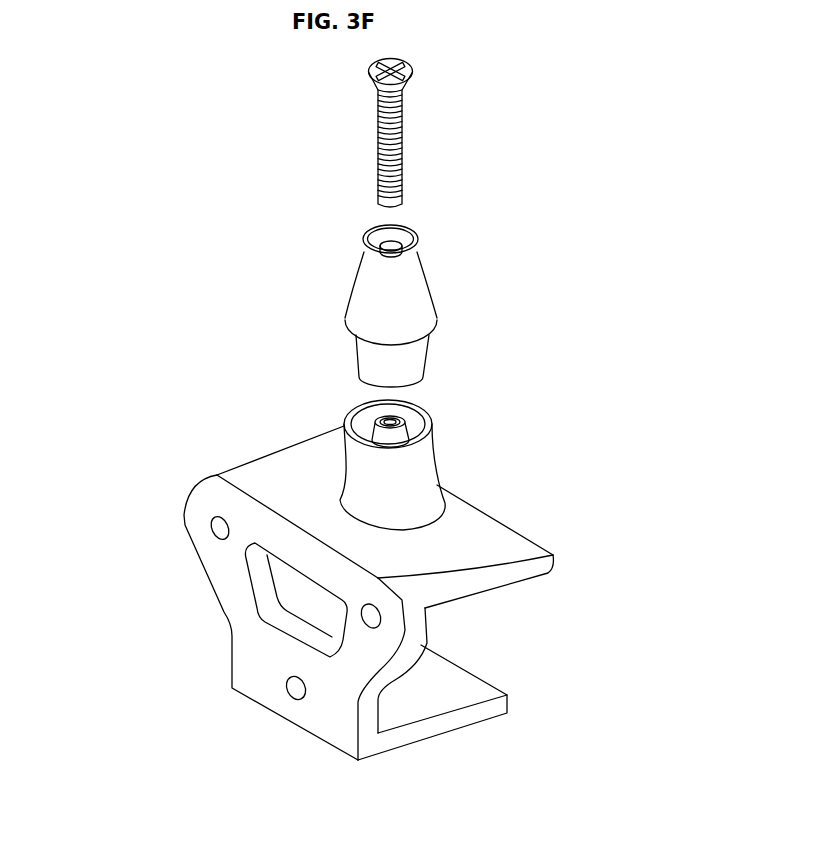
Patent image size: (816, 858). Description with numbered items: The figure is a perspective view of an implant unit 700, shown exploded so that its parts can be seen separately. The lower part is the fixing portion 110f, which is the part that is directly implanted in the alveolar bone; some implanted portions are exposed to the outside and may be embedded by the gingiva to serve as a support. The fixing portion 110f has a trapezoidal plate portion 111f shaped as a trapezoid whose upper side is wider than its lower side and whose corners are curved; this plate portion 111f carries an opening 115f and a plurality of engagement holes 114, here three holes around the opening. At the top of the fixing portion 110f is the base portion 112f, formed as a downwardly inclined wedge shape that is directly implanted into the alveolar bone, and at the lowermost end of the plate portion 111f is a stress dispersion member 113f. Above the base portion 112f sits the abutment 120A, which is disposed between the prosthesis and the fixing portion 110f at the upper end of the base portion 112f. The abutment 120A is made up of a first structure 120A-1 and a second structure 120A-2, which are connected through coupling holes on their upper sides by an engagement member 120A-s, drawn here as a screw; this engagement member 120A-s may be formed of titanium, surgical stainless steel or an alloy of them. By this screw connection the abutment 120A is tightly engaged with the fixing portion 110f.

The implant unit 700 is at (97, 281).
The abutment 120A is at (189, 131).
The engagement member 120A-s is at (380, 140).
The first structure 120A-1 is at (362, 312).
The second structure 120A-2 is at (351, 424).
The fixing portion 110f is at (200, 461).
The base portion 112f is at (508, 548).
The trapezoidal plate portion 111f is at (340, 693).
The stress dispersion member 113f is at (427, 703).
The engagement holes 114 is at (212, 523).
The opening 115f is at (292, 594).